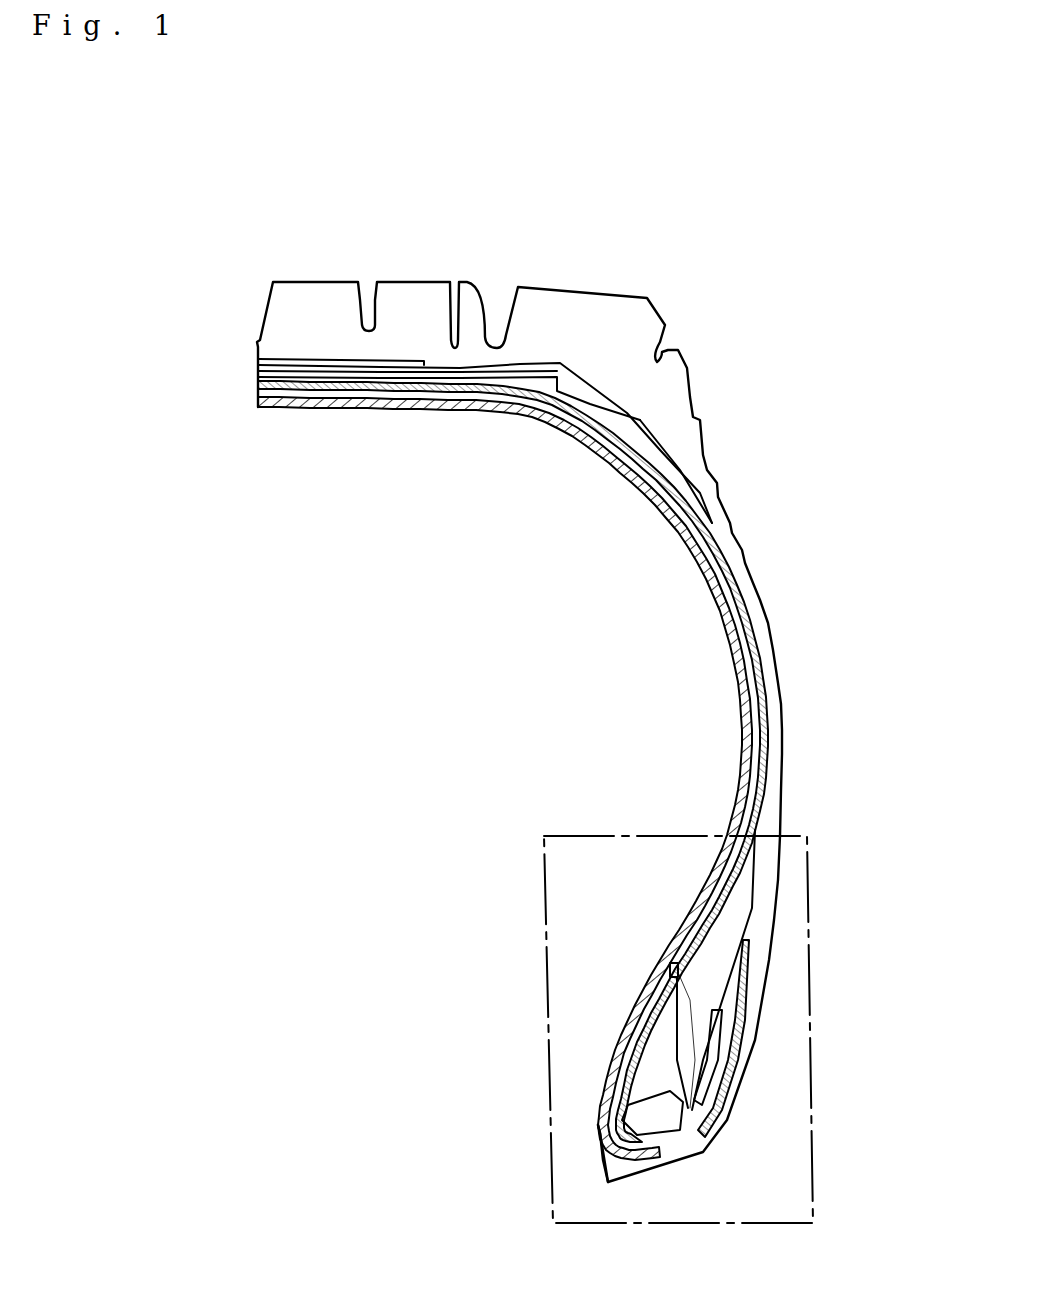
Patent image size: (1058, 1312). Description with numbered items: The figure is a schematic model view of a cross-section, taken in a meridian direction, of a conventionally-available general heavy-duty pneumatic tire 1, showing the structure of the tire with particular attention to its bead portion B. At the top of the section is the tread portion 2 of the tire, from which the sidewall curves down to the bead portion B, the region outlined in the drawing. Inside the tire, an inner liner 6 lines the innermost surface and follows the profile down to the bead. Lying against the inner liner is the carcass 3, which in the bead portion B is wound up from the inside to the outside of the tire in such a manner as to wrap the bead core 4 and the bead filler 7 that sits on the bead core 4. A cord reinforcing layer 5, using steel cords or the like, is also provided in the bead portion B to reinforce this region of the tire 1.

The heavy-duty pneumatic tire 1 is at (590, 270).
The tread portion 2 is at (427, 285).
The carcass 3 is at (733, 895).
The bead core 4 is at (658, 1117).
The cord reinforcing layer 5 is at (597, 1100).
The inner liner 6 is at (697, 910).
The bead filler 7 is at (655, 1057).
The bead portion B is at (809, 969).